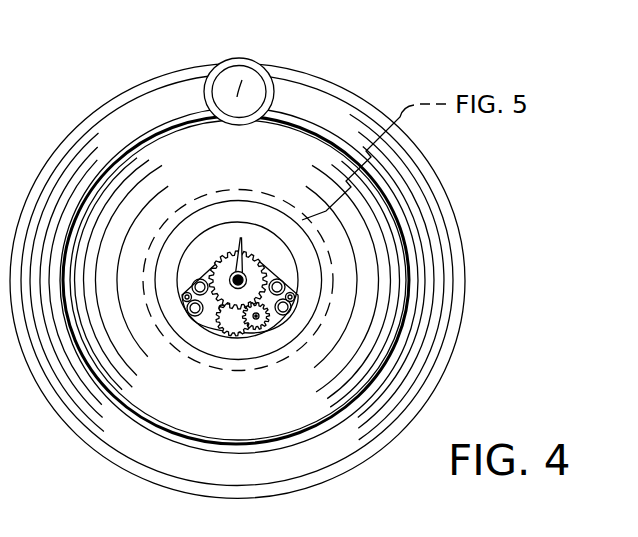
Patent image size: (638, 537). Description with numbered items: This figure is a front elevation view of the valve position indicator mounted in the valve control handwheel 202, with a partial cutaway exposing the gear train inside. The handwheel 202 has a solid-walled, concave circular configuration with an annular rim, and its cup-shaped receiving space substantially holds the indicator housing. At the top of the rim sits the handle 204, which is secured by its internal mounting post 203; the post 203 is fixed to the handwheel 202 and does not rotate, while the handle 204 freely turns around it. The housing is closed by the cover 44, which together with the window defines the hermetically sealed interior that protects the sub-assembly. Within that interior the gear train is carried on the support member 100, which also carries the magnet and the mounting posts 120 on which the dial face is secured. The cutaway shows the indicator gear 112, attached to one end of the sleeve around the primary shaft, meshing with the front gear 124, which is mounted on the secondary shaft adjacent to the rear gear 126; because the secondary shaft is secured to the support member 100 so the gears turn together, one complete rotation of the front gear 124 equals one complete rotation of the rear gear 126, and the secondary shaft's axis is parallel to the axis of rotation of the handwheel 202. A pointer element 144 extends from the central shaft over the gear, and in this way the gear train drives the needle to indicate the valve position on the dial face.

The cover 44 is at (262, 210).
The support member 100 is at (228, 312).
The indicator gear 112 is at (220, 297).
The mounting posts 120 is at (183, 295).
The front gear 124 is at (275, 317).
The rear gear 126 is at (256, 333).
The hand 144 is at (241, 245).
The handwheel 202 is at (345, 95).
The internal mounting post 203 is at (242, 80).
The handle 204 is at (268, 60).